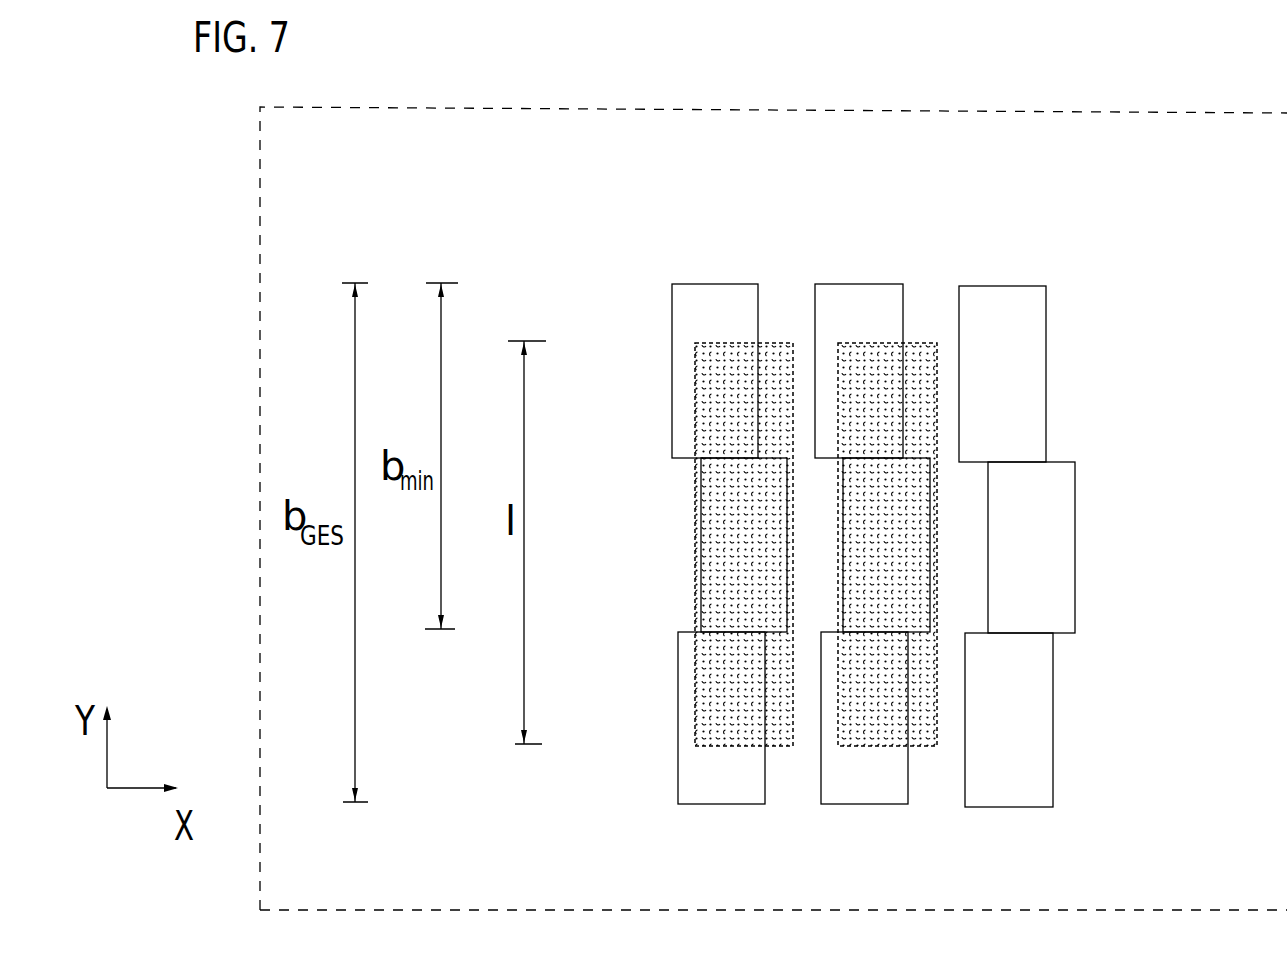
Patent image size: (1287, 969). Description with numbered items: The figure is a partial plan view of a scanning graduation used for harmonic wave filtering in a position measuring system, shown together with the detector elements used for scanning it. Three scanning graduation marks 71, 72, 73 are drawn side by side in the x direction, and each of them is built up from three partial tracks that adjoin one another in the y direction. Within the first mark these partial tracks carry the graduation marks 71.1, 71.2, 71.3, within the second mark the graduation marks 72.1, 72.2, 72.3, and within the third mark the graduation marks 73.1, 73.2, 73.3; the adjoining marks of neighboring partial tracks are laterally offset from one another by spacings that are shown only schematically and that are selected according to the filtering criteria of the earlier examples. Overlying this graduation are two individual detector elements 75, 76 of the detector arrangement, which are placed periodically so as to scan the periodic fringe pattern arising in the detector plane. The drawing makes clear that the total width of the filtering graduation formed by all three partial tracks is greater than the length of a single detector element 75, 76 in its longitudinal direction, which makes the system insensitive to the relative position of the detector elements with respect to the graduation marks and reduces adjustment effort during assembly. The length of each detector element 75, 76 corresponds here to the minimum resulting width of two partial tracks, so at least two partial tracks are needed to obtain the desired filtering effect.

The scanning graduation mark 71 is at (706, 262).
The scanning graduation mark 72 is at (840, 266).
The scanning graduation mark 73 is at (993, 270).
The graduation mark 71.1 is at (705, 314).
The graduation mark 71.2 is at (747, 586).
The graduation mark 71.3 is at (729, 777).
The graduation mark 72.1 is at (832, 330).
The graduation mark 72.2 is at (888, 533).
The graduation mark 72.3 is at (865, 785).
The graduation mark 73.1 is at (1008, 330).
The graduation mark 73.2 is at (1030, 592).
The graduation mark 73.3 is at (1007, 731).
The detector element 75 is at (730, 425).
The detector element 76 is at (928, 657).